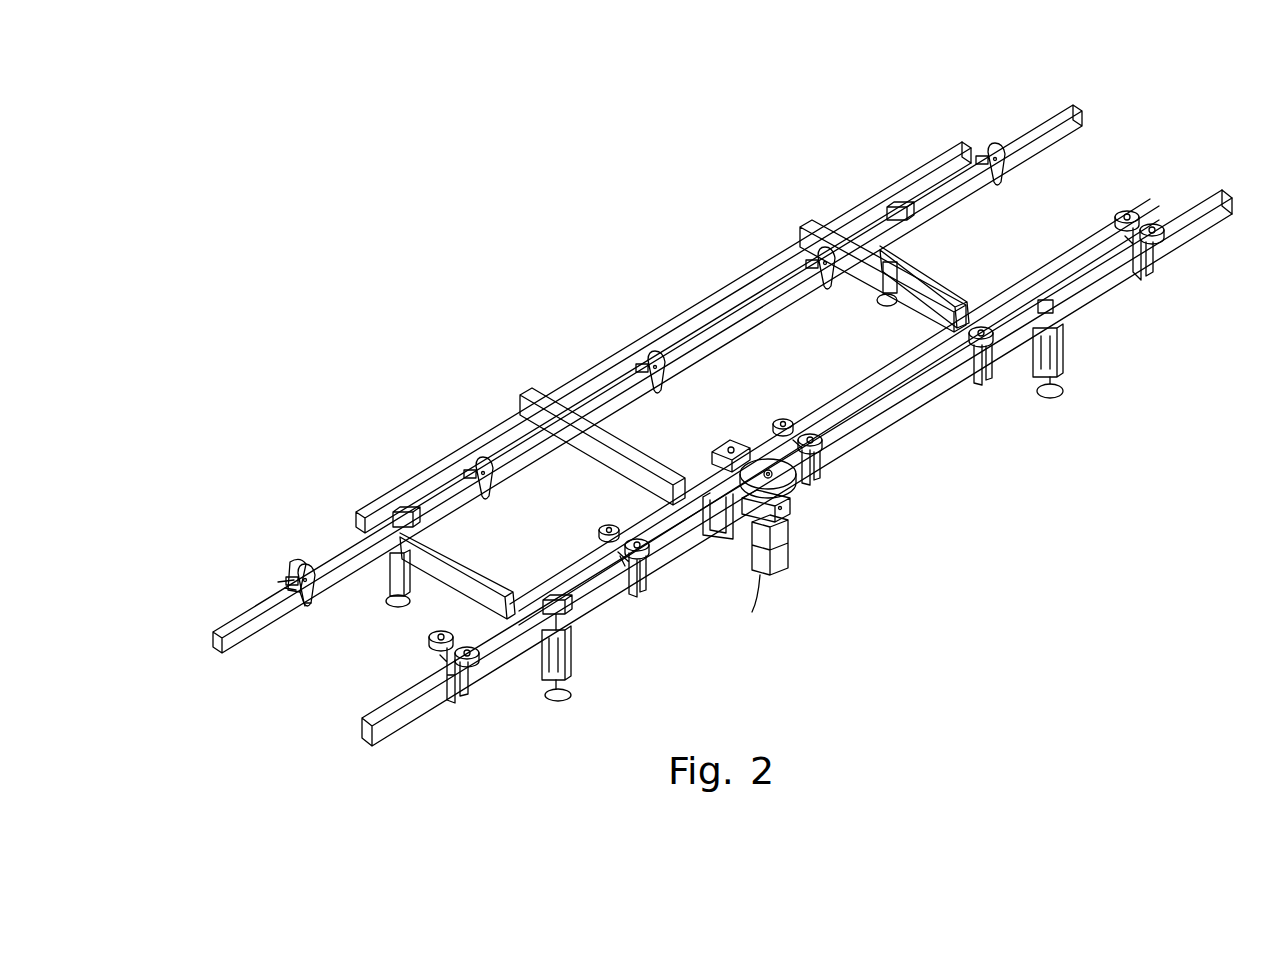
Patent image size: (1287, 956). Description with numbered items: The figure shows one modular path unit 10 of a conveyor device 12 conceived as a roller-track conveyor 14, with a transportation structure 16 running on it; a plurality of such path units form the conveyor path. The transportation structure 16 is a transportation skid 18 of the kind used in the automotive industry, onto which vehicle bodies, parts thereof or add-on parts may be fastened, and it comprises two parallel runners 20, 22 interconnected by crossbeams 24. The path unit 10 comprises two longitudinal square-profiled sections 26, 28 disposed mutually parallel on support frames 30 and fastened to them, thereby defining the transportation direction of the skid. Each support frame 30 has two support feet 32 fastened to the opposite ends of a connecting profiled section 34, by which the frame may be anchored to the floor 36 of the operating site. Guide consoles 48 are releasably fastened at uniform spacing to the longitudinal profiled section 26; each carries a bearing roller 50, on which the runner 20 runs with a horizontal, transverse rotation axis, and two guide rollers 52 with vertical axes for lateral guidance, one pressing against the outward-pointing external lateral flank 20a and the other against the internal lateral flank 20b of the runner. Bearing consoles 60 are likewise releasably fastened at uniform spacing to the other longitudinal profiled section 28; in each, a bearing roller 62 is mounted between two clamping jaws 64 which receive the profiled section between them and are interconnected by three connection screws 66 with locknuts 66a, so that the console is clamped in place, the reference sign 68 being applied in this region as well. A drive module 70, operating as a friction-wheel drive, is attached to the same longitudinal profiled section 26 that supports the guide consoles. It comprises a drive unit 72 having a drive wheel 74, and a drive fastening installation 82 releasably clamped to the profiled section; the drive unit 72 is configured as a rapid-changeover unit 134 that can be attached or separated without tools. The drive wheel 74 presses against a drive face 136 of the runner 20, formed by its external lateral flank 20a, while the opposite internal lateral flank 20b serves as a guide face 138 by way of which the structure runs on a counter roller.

The path unit 10 is at (1020, 135).
The conveyor device 12 is at (500, 153).
The roller-track conveyor 14 is at (598, 153).
The transportation structure 16 is at (645, 332).
The transportation skid 18 is at (715, 292).
The runner 20 is at (1080, 250).
The external lateral flank 20a is at (1070, 272).
The internal lateral flank 20b is at (1045, 265).
The runner 22 is at (910, 177).
The crossbeams 24 is at (545, 385).
The longitudinal square-profiled section 26 is at (1200, 200).
The longitudinal square-profiled section 28 is at (1068, 108).
The support frame 30 is at (578, 660).
The support feet 32 is at (395, 596).
The connecting profiled section 34 is at (475, 575).
The floor 36 is at (816, 549).
The guide console 48 is at (458, 708).
The bearing roller 50 is at (805, 430).
The guide rollers 52 is at (783, 418).
The bearing console 60 is at (301, 557).
The bearing roller 62 is at (292, 578).
The clamping jaws 64 is at (315, 606).
The connection screws 66 is at (300, 604).
The locknuts 66a is at (290, 574).
The fastener 68 is at (290, 590).
The drive module 70 is at (814, 569).
The drive unit 72 is at (795, 582).
The drive wheel 74 is at (790, 492).
The drive fastening installation 82 is at (752, 612).
The rapid-changeover unit 134 is at (772, 576).
The drive face 136 is at (727, 539).
The guide face 138 is at (712, 462).